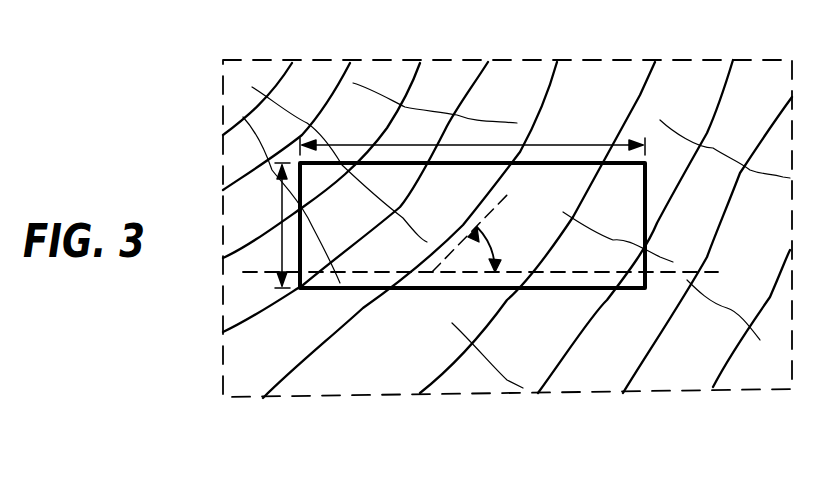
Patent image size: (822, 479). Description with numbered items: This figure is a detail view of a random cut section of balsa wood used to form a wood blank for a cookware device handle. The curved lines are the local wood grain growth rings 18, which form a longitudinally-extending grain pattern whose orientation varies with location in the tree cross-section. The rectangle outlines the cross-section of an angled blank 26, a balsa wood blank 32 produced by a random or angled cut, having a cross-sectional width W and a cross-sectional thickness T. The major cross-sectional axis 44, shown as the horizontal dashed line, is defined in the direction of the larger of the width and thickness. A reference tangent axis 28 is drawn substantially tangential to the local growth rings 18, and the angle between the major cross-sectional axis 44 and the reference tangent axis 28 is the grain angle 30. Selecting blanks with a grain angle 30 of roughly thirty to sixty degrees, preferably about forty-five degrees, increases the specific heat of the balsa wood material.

The growth rings 18 is at (325, 347).
The angled blank 26 is at (408, 122).
The reference tangent axis 28 is at (508, 192).
The grain angle 30 is at (492, 252).
The balsa wood blank 32 is at (326, 297).
The major cross-sectional axis 44 is at (691, 273).